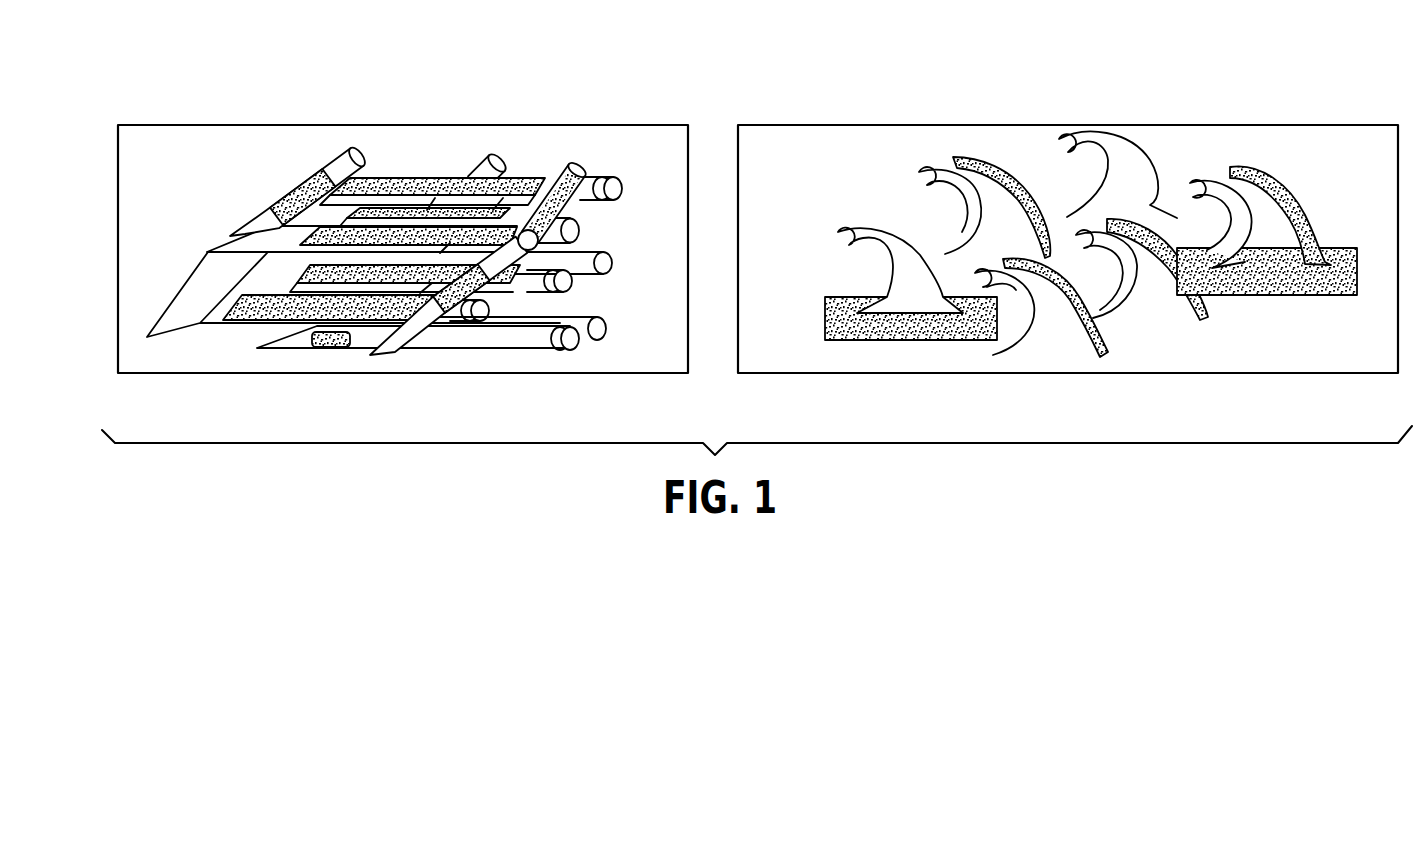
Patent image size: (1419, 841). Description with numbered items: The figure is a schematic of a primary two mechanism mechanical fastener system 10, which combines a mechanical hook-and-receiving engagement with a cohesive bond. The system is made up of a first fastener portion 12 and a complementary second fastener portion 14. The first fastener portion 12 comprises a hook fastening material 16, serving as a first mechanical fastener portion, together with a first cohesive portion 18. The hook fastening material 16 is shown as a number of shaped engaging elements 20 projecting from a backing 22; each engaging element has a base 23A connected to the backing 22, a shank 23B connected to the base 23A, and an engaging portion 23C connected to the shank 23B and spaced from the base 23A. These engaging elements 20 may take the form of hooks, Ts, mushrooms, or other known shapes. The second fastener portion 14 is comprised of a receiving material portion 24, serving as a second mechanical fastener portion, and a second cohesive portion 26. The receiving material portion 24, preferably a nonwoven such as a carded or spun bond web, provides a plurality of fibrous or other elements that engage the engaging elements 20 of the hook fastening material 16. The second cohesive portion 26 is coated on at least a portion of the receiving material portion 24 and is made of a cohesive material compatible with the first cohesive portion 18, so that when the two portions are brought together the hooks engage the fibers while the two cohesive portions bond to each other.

The primary two mechanism mechanical fastener system 10 is at (732, 98).
The first fastener portion 12 is at (1288, 360).
The second fastener portion 14 is at (272, 362).
The hook fastening material 16 is at (1128, 165).
The first cohesive portion 18 is at (986, 230).
The engaging elements 20 is at (1048, 318).
The backing 22 is at (1195, 359).
The base 23A is at (1046, 340).
The shank 23B is at (1028, 296).
The engaging portion 23C is at (1003, 272).
The receiving material portion 24 is at (517, 338).
The second cohesive portion 26 is at (415, 178).